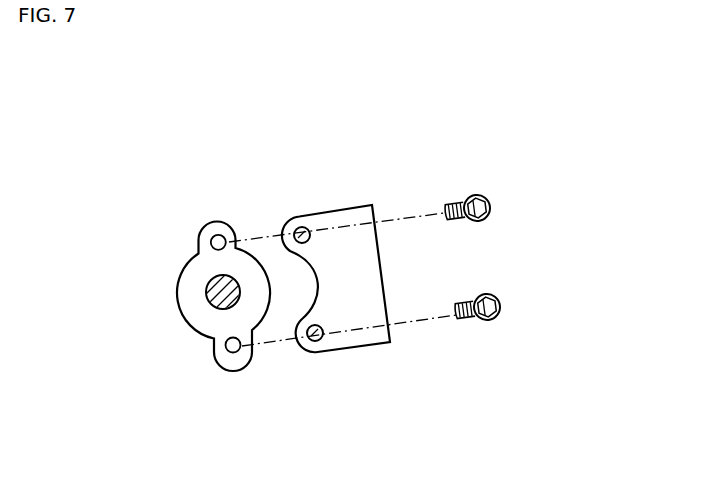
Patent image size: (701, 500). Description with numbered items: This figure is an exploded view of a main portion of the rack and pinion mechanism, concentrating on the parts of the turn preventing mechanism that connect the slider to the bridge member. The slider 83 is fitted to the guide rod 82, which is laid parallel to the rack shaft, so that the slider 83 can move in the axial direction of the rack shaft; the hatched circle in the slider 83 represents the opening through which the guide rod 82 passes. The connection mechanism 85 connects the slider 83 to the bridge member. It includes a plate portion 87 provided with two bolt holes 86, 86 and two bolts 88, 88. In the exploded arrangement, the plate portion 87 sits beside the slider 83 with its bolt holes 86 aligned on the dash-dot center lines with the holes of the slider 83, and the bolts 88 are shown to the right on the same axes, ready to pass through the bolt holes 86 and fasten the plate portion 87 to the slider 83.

The guide rod 82 is at (215, 305).
The slider 83 is at (193, 302).
The connection mechanism 85 is at (404, 314).
The bolt holes 86 is at (311, 229).
The plate portion 87 is at (373, 334).
The bolts 88 is at (492, 208).